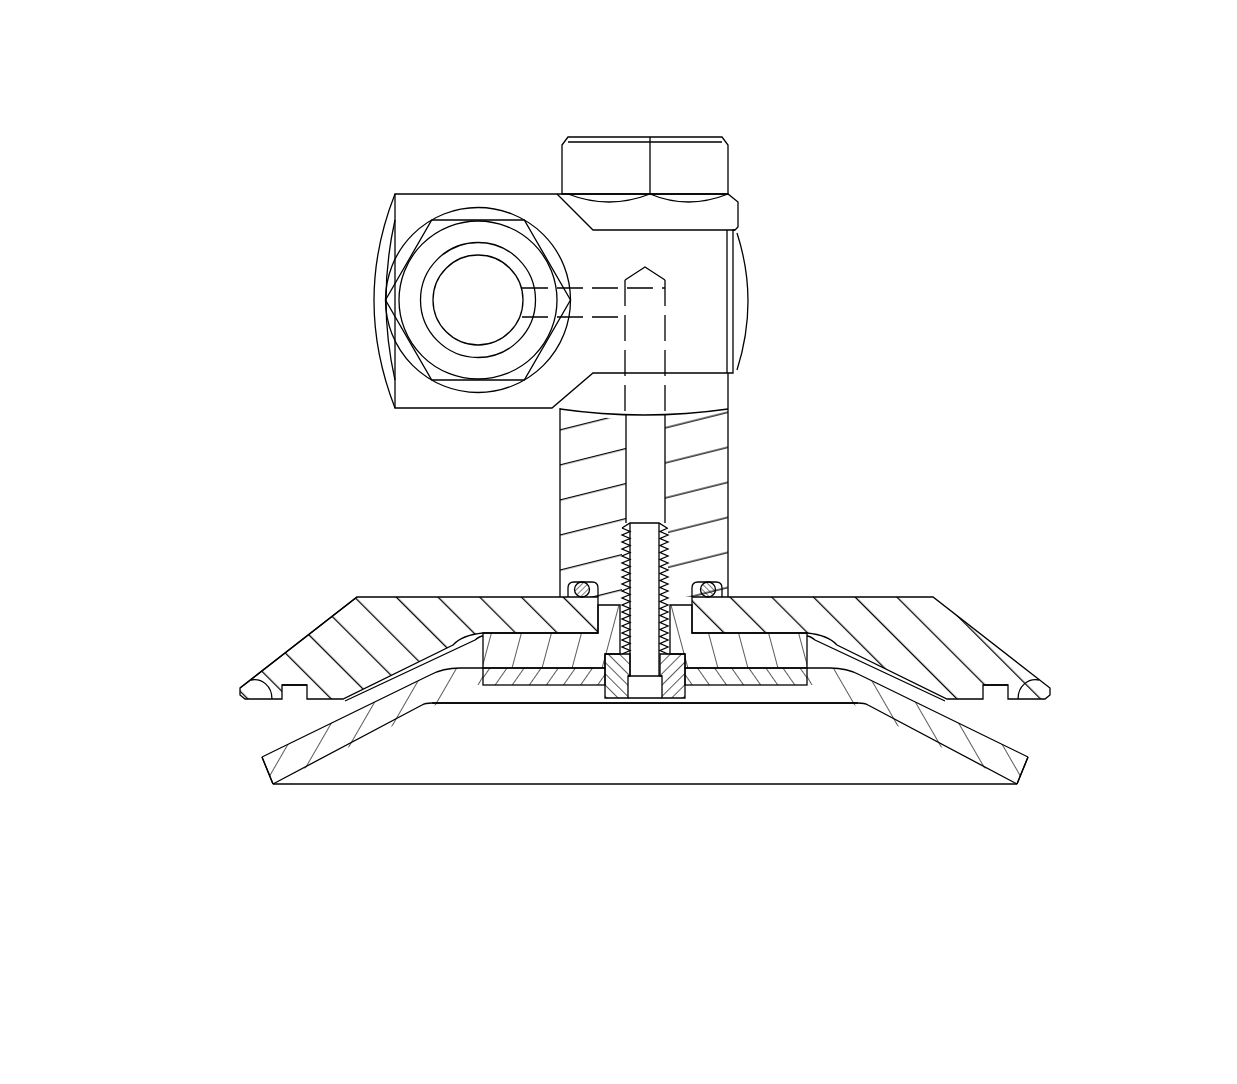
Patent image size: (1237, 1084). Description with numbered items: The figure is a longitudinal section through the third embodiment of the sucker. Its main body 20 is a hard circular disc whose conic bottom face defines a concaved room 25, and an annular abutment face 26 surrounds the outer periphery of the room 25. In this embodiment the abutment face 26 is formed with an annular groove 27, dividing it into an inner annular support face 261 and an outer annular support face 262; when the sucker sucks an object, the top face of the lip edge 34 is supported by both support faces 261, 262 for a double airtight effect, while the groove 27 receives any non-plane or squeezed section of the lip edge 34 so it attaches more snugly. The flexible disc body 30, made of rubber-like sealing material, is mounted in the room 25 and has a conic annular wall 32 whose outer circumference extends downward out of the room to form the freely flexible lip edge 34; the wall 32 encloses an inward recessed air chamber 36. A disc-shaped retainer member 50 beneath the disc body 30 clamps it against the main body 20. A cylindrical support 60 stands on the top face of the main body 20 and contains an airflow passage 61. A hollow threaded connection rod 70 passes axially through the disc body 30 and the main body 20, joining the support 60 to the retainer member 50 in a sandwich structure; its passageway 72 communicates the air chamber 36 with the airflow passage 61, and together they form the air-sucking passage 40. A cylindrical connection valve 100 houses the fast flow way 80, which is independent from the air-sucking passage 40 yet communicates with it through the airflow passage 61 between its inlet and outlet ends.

The main body 20 is at (943, 583).
The room 25 is at (910, 680).
The annular abutment face 26 is at (268, 528).
The inner annular support face 261 is at (265, 672).
The outer annular support face 262 is at (332, 690).
The annular groove 27 is at (291, 696).
The disc body 30 is at (935, 760).
The annular wall 32 is at (377, 708).
The lip edge 34 is at (298, 758).
The air chamber 36 is at (482, 761).
The air-sucking passage 40 is at (660, 444).
The retainer member 50 is at (534, 700).
The support 60 is at (749, 408).
The airflow passage 61 is at (665, 351).
The connection rod 70 is at (632, 515).
The passageway 72 is at (648, 542).
The fast flow way 80 is at (475, 270).
The connection valve 100 is at (420, 265).